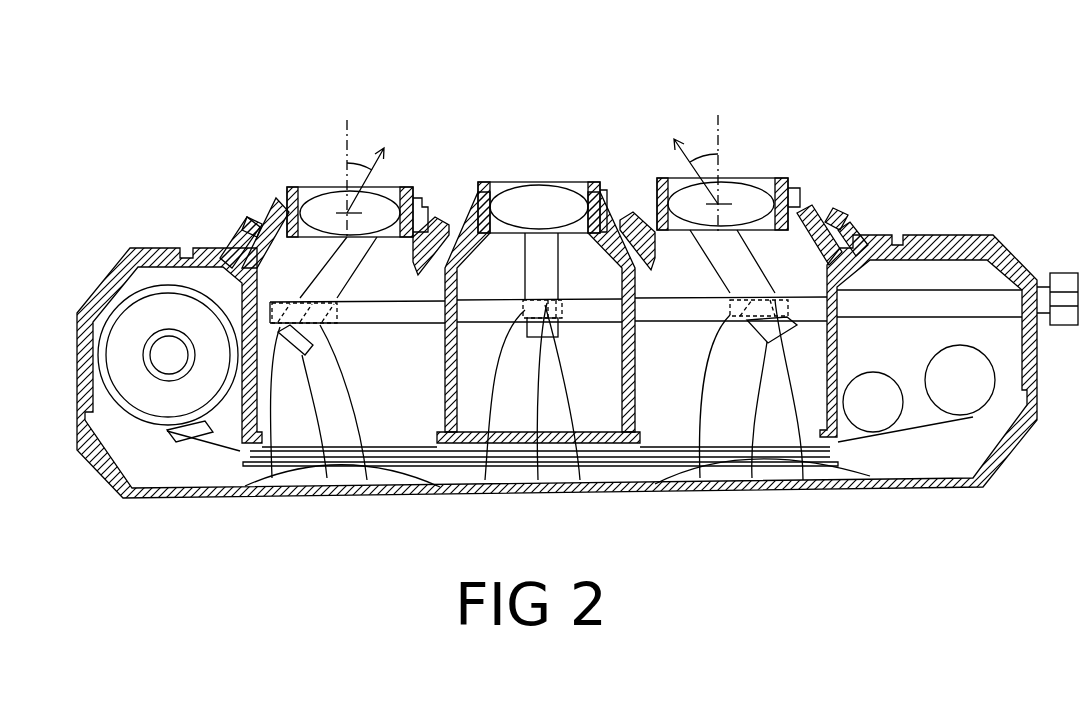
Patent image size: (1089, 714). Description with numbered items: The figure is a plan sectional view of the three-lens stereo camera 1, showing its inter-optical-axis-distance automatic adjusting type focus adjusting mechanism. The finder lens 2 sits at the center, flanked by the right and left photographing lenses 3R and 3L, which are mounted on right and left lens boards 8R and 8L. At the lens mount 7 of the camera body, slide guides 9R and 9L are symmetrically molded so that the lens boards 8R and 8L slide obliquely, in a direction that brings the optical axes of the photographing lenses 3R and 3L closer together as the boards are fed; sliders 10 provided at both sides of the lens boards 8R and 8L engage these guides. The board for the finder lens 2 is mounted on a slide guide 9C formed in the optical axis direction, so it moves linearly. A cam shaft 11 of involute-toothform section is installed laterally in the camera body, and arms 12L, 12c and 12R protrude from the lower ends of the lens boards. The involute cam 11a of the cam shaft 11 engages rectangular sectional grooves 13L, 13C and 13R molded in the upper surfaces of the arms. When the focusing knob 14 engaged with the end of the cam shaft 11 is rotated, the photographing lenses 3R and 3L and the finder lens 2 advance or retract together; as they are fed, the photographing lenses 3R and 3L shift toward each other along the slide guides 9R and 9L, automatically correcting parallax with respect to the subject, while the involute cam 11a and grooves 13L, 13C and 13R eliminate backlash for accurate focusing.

The three-lens stereo camera 1 is at (281, 148).
The finder lens 2 is at (539, 182).
The left photographing lens 3L is at (318, 188).
The right photographing lens 3R is at (752, 178).
The lens mount 7 is at (887, 236).
The left lens board 8L is at (258, 222).
The right lens board 8R is at (808, 207).
The left slide guide 9L is at (463, 222).
The center slide guide 9C is at (486, 196).
The right slide guide 9R is at (622, 210).
The sliders 10 is at (437, 217).
The cam shaft 11 is at (937, 302).
The involute cam 11a is at (272, 480).
The left arm 12L is at (327, 478).
The center arm 12c is at (538, 480).
The right arm 12R is at (752, 478).
The left rectangular sectional groove 13L is at (367, 480).
The center rectangular sectional groove 13C is at (580, 480).
The right rectangular sectional groove 13R is at (803, 480).
The focusing knob 14 is at (1063, 273).